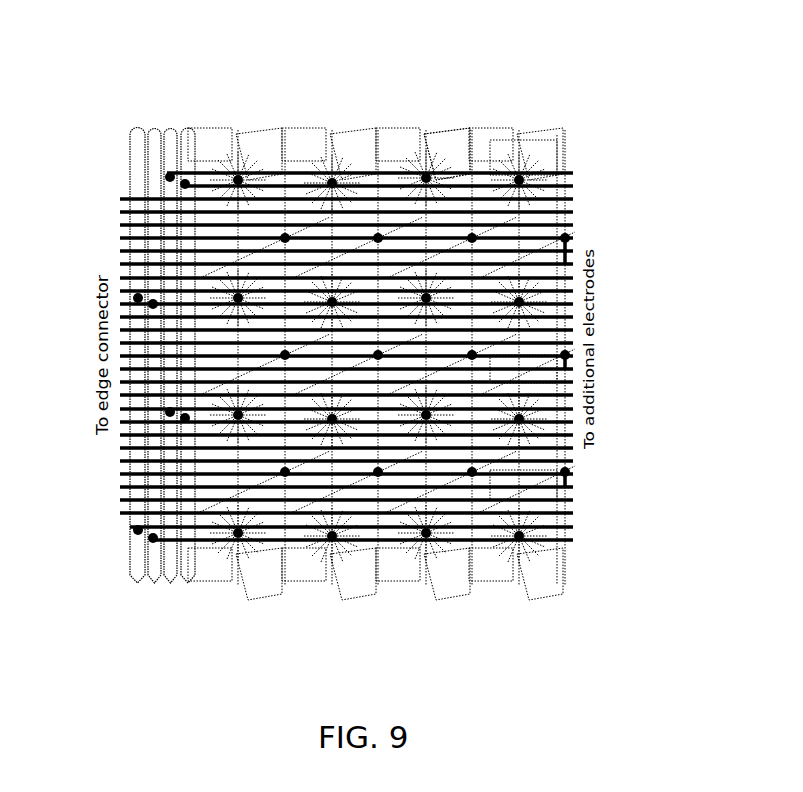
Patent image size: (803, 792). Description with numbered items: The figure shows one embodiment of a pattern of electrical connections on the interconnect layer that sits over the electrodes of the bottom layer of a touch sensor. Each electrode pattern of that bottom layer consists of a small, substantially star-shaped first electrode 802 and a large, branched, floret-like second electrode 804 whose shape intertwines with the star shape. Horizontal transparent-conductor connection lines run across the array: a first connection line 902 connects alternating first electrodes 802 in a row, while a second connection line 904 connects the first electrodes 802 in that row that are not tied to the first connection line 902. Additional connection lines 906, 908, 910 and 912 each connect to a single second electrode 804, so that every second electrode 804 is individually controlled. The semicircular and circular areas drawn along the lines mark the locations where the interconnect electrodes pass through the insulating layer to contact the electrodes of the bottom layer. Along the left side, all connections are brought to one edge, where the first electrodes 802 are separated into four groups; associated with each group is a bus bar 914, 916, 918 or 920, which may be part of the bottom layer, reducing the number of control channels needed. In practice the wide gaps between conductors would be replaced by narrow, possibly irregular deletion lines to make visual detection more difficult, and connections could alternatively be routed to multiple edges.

The first electrode 802 is at (425, 162).
The second electrode 804 is at (462, 150).
The first connection line 902 is at (570, 173).
The second connection line 904 is at (570, 186).
The additional connection line 906 is at (200, 223).
The additional connection line 908 is at (150, 238).
The additional connection line 910 is at (183, 250).
The additional connection line 912 is at (570, 254).
The bus bar 914 is at (138, 157).
The bus bar 916 is at (153, 127).
The bus bar 918 is at (170, 125).
The bus bar 920 is at (185, 125).